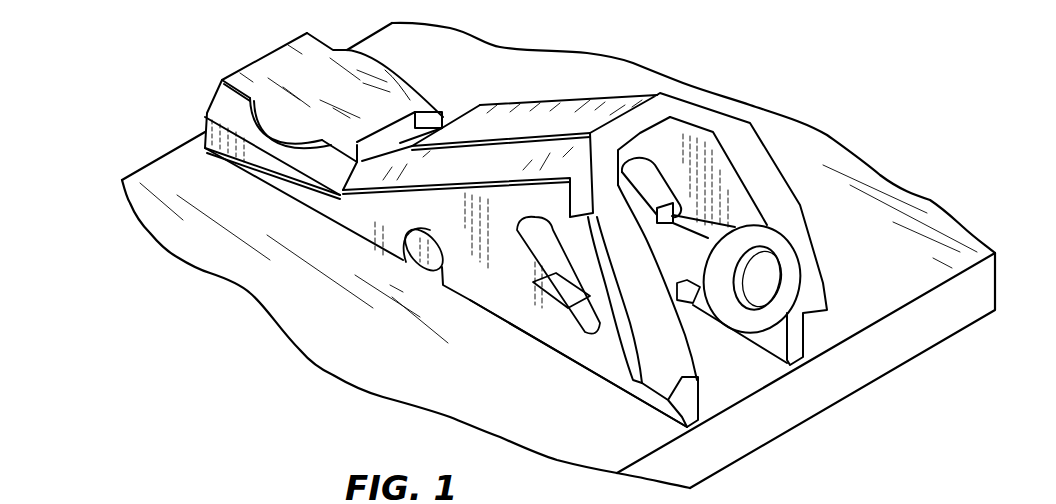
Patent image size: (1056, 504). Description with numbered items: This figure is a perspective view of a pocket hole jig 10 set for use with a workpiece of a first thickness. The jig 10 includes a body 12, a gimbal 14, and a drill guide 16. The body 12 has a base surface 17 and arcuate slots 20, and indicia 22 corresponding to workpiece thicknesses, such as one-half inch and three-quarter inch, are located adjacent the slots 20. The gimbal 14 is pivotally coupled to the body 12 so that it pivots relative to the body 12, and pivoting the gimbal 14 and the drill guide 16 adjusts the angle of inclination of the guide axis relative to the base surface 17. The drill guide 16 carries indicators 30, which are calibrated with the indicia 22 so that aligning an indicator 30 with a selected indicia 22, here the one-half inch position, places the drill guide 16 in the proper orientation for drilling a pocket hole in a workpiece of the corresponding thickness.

The pocket hole jig 10 is at (775, 48).
The body 12 is at (577, 107).
The gimbal 14 is at (403, 250).
The drill guide 16 is at (705, 228).
The base surface 17 is at (498, 325).
The arcuate slots 20 is at (525, 222).
The indicia 22 is at (668, 310).
The indicators 30 is at (693, 308).